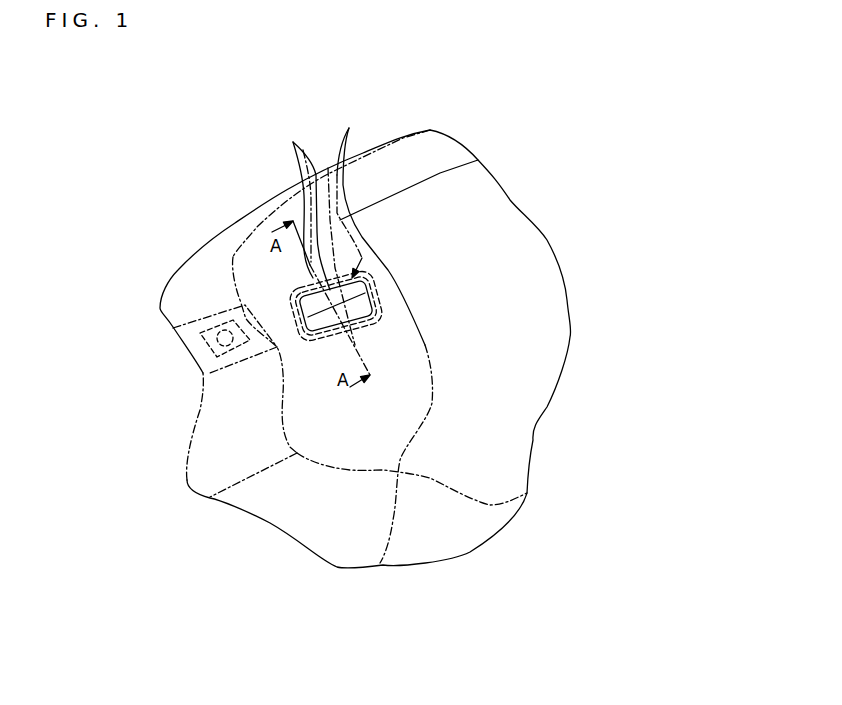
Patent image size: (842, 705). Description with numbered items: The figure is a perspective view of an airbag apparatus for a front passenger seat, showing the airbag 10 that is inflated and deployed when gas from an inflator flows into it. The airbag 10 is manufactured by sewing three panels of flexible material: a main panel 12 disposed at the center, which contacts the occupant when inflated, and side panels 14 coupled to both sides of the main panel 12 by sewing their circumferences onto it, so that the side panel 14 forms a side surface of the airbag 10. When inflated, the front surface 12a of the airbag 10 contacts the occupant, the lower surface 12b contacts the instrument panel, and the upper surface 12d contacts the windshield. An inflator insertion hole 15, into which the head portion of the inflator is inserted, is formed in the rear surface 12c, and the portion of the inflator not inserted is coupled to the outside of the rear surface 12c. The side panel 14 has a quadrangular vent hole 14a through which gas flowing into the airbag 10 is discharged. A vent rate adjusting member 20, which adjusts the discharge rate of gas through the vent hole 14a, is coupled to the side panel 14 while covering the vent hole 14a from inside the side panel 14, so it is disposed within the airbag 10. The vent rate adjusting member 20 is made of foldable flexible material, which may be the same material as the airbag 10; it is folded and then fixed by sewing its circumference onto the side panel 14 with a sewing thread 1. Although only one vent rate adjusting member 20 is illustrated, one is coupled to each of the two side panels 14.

The airbag 10 is at (490, 628).
The main panel 12 is at (451, 534).
The front surface 12a is at (527, 332).
The lower surface 12b is at (321, 557).
The rear surface 12c is at (197, 360).
The upper surface 12d is at (253, 210).
The side panel 14 is at (372, 545).
The vent hole 14a is at (295, 300).
The inflator insertion hole 15 is at (215, 352).
The sewing thread 1 is at (294, 144).
The vent rate adjusting member 20 is at (381, 225).